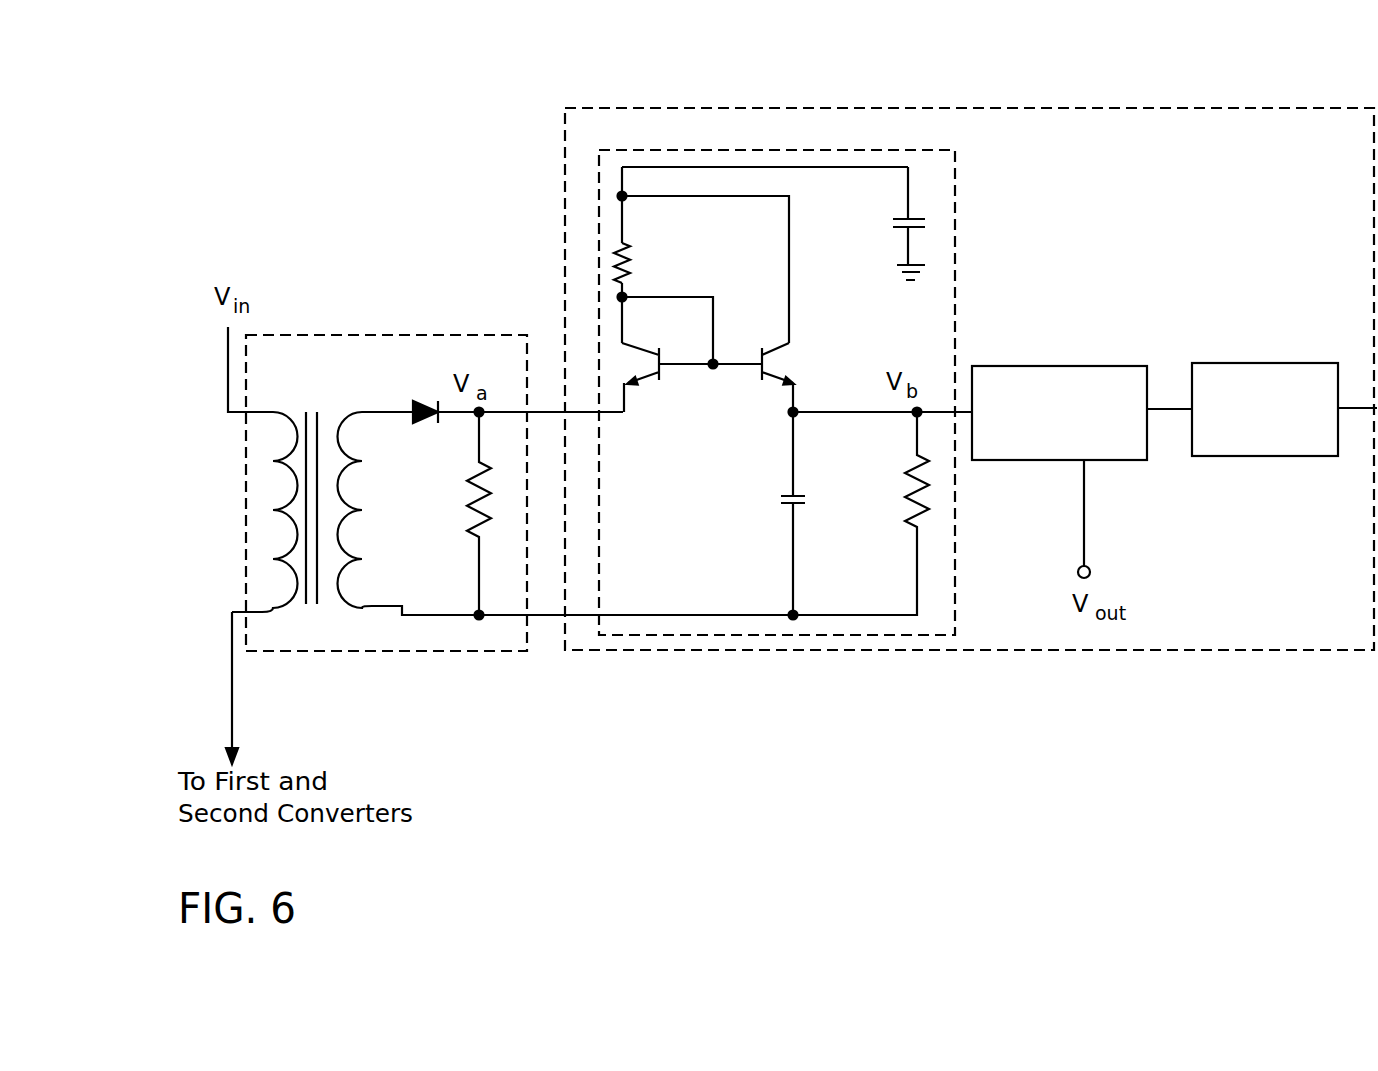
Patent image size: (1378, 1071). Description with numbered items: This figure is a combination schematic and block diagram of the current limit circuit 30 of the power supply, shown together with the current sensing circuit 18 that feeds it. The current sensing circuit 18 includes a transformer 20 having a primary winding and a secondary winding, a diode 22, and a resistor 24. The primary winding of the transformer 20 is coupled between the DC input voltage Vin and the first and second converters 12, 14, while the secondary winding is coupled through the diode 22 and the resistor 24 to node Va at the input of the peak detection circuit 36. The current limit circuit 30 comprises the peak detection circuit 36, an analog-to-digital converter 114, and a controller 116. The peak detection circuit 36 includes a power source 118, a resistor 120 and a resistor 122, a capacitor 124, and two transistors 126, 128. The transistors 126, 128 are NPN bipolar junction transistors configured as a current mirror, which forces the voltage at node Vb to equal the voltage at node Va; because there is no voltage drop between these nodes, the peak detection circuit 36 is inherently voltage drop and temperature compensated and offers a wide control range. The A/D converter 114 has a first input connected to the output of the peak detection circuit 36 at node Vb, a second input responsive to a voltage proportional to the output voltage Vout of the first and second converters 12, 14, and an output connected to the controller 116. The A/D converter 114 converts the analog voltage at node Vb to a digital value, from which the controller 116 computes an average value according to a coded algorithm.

The first converter 12 is at (197, 847).
The second converter 14 is at (250, 847).
The current sensing circuit 18 is at (385, 335).
The transformer 20 is at (319, 604).
The diode 22 is at (421, 418).
The resistor 24 is at (467, 499).
The current limit circuit 30 is at (1275, 108).
The peak detection circuit 36 is at (957, 295).
The analog-to-digital (A/D) converter 114 is at (1108, 366).
The controller 116 is at (1278, 363).
The power source 118 is at (925, 222).
The resistor 120 is at (627, 268).
The resistor 122 is at (912, 505).
The capacitor 124 is at (785, 500).
The transistor 126 is at (645, 383).
The transistor 128 is at (777, 362).